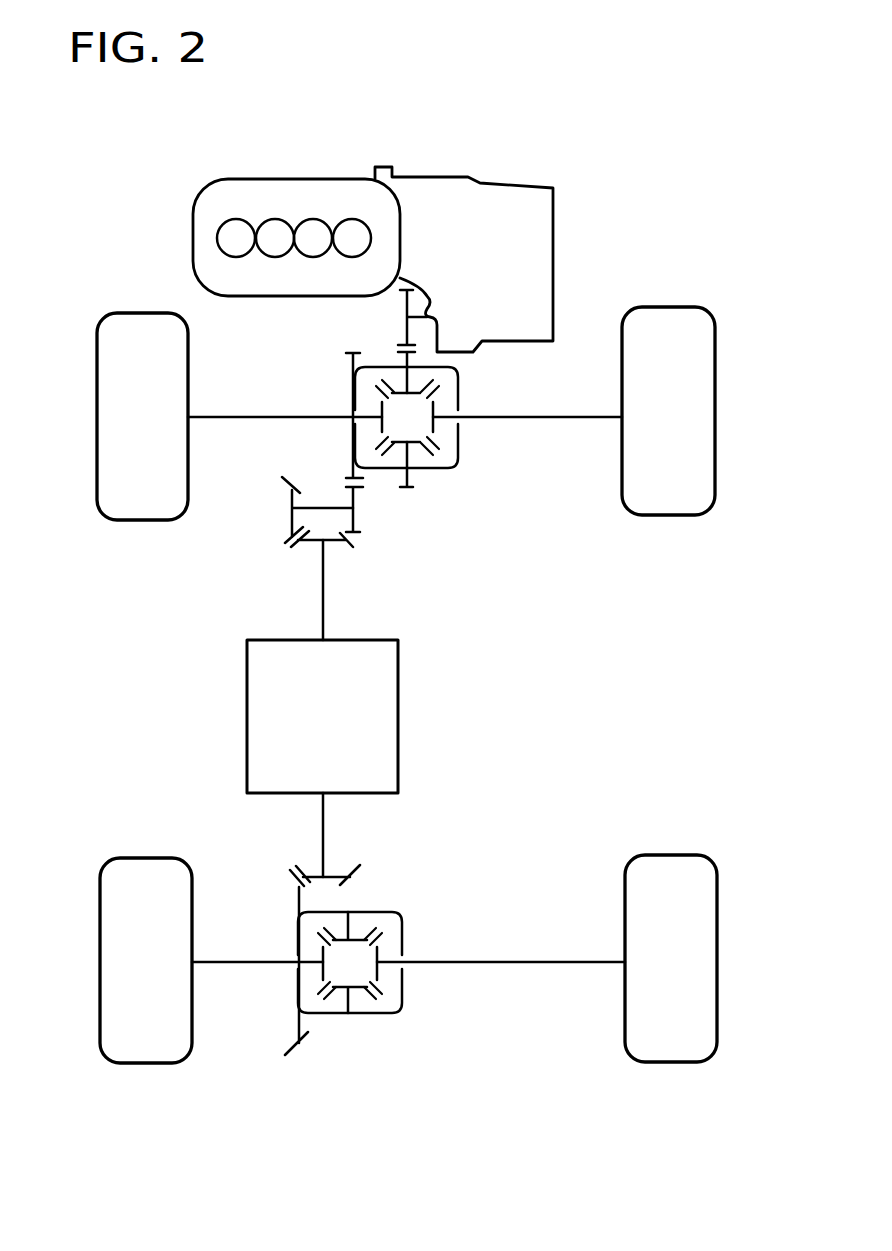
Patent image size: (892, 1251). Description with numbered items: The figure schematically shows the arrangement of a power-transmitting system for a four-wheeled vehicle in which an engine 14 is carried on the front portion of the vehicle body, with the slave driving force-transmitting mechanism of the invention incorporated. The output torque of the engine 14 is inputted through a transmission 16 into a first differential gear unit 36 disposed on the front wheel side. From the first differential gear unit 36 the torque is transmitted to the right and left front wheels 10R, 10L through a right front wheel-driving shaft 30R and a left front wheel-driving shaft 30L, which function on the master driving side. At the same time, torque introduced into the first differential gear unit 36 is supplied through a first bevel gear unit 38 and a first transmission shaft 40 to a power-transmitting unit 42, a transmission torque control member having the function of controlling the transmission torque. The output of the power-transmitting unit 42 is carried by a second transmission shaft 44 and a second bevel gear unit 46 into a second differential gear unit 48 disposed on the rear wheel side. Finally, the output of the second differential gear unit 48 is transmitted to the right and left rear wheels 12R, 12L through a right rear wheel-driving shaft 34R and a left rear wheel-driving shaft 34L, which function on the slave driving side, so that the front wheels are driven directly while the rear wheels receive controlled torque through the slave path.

The engine 14 is at (292, 191).
The transmission 16 is at (530, 198).
The left front wheel 10L is at (108, 411).
The right front wheel 10R is at (714, 419).
The left rear wheel 12L is at (110, 935).
The right rear wheel 12R is at (714, 938).
The left front wheel-driving shaft 30L is at (262, 414).
The right front wheel-driving shaft 30R is at (553, 414).
The left rear wheel-driving shaft 34L is at (247, 963).
The right rear wheel-driving shaft 34R is at (503, 963).
The first differential gear unit 36 is at (458, 450).
The first bevel gear unit 38 is at (278, 529).
The first transmission shaft 40 is at (323, 598).
The power-transmitting unit 42 is at (392, 685).
The second transmission shaft 44 is at (323, 830).
The second bevel gear unit 46 is at (287, 891).
The second differential gear unit 48 is at (402, 932).